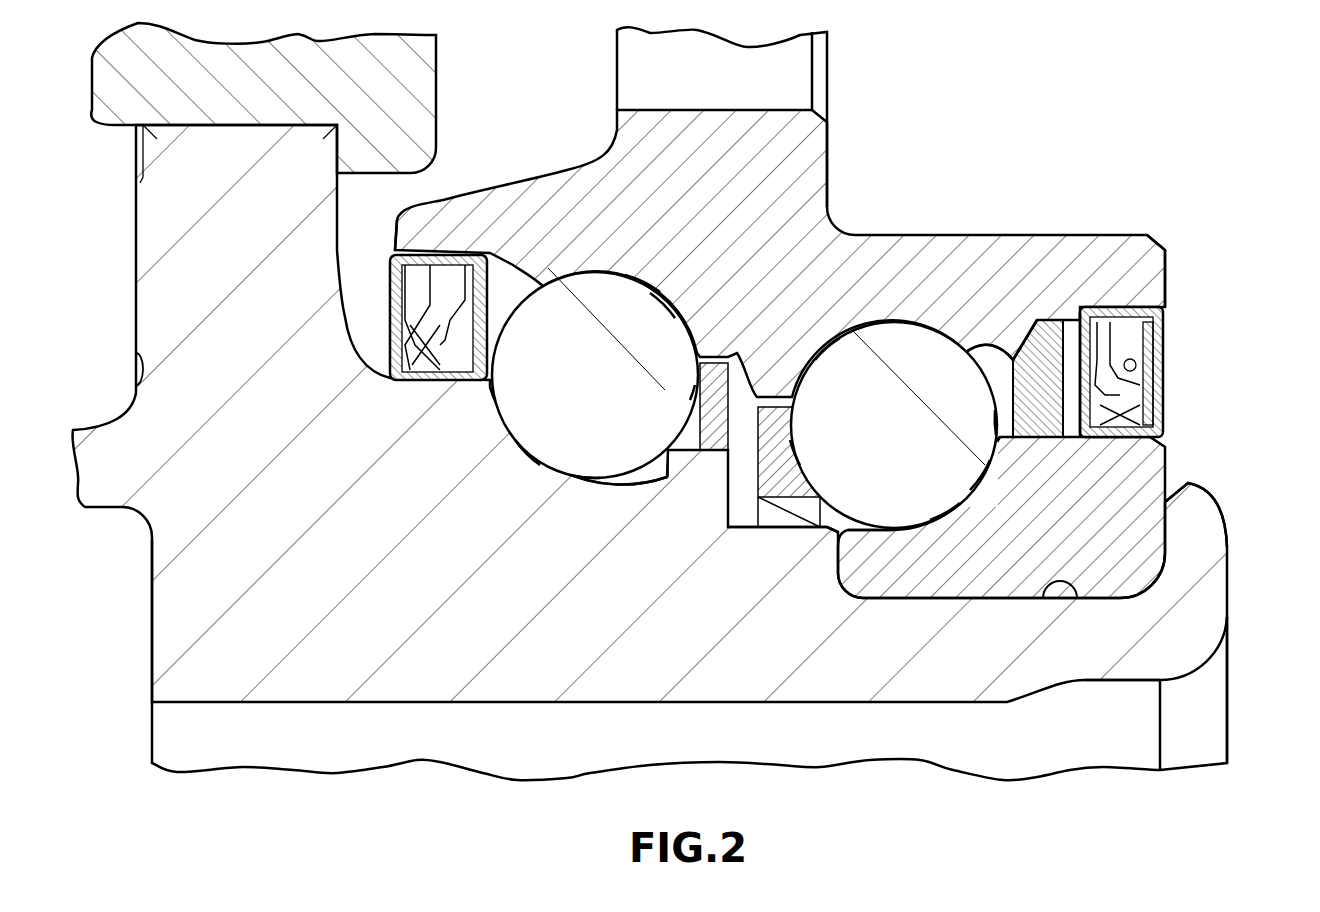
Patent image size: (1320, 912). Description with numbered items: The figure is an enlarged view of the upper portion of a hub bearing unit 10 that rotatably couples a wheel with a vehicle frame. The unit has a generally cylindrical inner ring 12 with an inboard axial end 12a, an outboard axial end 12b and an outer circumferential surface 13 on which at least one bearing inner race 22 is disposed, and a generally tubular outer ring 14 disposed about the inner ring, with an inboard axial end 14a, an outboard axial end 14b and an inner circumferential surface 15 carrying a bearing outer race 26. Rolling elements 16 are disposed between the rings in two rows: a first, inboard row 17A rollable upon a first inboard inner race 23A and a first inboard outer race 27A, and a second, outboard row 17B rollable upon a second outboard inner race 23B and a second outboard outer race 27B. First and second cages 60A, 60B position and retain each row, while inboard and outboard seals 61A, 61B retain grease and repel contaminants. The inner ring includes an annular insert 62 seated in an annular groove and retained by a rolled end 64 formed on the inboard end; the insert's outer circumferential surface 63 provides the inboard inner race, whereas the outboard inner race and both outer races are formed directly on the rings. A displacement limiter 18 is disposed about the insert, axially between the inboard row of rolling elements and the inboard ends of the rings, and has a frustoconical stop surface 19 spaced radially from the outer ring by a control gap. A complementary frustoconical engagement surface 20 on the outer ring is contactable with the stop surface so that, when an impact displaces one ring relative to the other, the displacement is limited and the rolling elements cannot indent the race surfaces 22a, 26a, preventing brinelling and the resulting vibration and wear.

The hub bearing unit 10 is at (756, 353).
The inner ring 12 is at (454, 723).
The inboard axial end 12a is at (1220, 602).
The outboard axial end 12b is at (169, 617).
The outer circumferential surface 13 is at (707, 492).
The outer ring 14 is at (862, 157).
The inboard axial end 14a is at (1157, 267).
The outboard axial end 14b is at (403, 227).
The inner circumferential surface 15 is at (1013, 317).
The rolling elements 16 is at (530, 423).
The first row of rolling elements 17A is at (840, 458).
The second row of rolling elements 17B is at (508, 405).
The displacement limiter 18 is at (1070, 342).
The frustoconical stop surface 19 is at (1022, 318).
The engagement surface 20 is at (1077, 312).
The bearing inner race 22 is at (917, 515).
The outer surface of inner race 22a is at (538, 455).
The first inboard inner race 23A is at (978, 490).
The second outboard inner race 23B is at (550, 465).
The bearing outer race 26 is at (578, 284).
The outer surface of outer race 26a is at (660, 280).
The first inboard outer race 27A is at (933, 318).
The second outboard outer race 27B is at (640, 287).
The first cage 60A is at (762, 495).
The second cage 60B is at (695, 420).
The inboard seal 61A is at (1172, 352).
The outboard seal 61B is at (380, 322).
The annular insert 62 is at (1158, 475).
The outer circumferential surface of insert 63 is at (997, 397).
The annular groove / rolled end 64 is at (1197, 520).